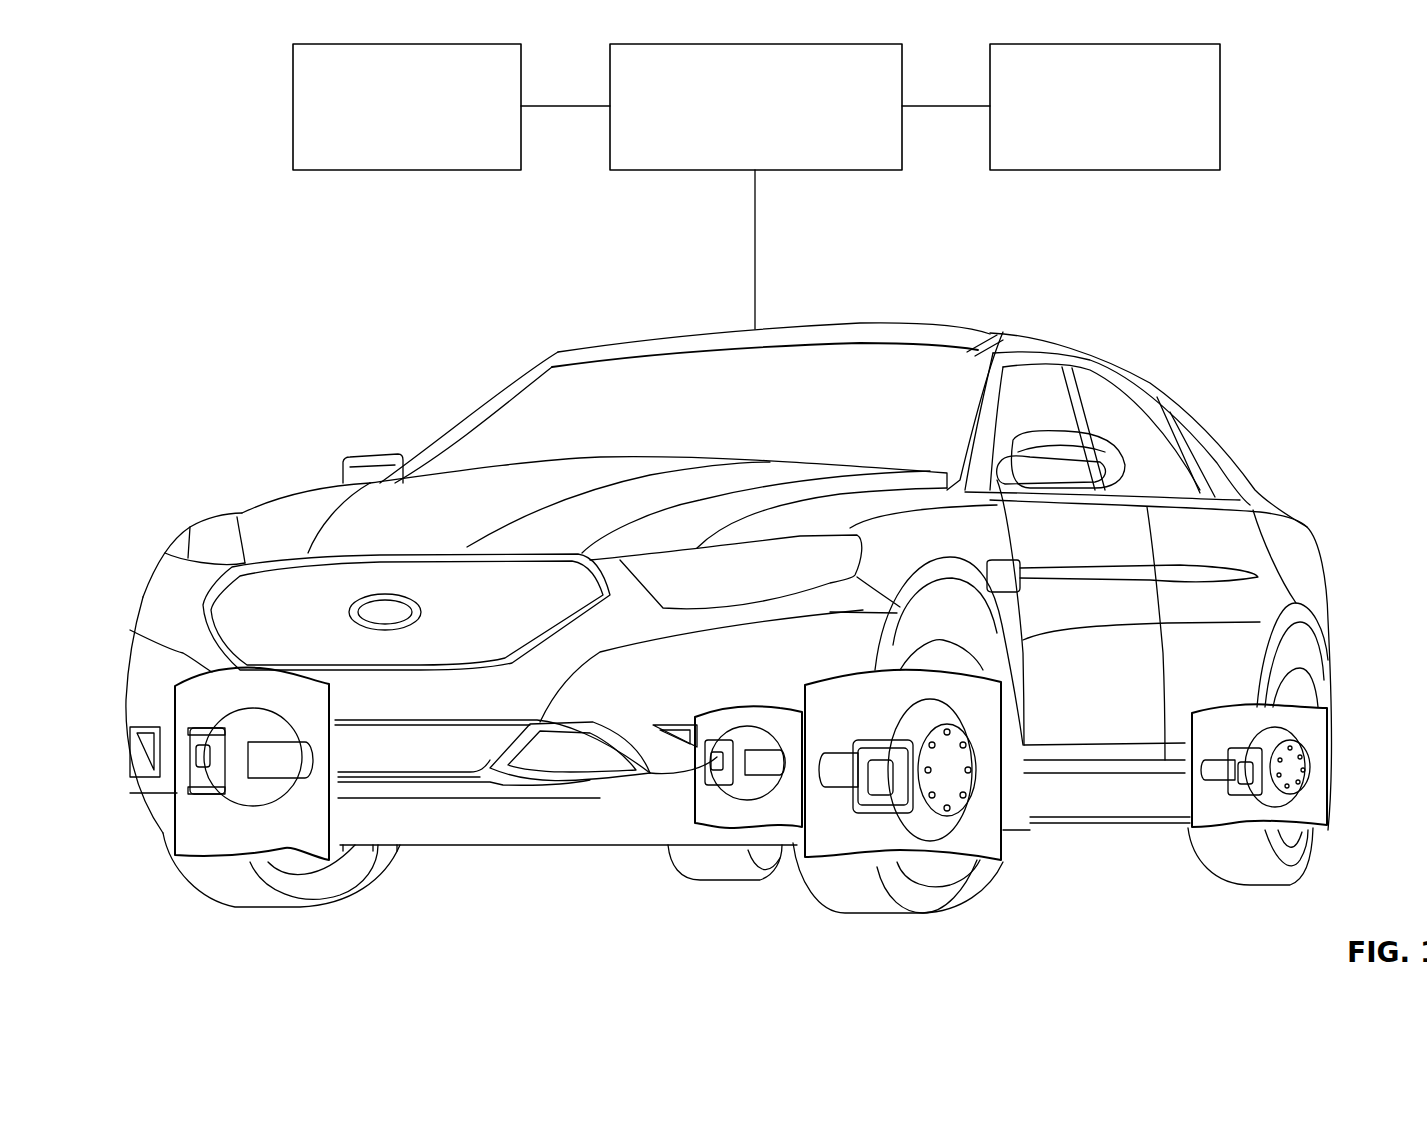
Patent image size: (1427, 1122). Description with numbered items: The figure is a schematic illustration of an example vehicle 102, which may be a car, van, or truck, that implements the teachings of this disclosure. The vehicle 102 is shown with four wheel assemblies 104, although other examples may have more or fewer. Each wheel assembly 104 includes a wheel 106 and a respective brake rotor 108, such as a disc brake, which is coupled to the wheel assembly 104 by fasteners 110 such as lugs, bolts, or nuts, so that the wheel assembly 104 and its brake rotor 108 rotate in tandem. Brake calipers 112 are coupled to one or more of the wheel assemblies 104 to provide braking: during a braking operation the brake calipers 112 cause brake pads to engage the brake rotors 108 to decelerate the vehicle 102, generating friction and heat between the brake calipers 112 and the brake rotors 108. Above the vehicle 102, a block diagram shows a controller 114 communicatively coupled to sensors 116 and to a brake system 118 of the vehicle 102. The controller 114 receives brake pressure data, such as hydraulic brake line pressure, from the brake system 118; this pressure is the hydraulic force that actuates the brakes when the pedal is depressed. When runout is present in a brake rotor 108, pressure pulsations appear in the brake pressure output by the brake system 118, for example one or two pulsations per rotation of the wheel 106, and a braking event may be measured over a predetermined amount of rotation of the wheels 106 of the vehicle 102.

The vehicle 102 is at (868, 323).
The wheel assemblies 104 is at (272, 917).
The wheel 106 is at (232, 900).
The brake rotor 108 is at (283, 712).
The fasteners 110 is at (983, 812).
The brake calipers 112 is at (207, 730).
The controller 114 is at (736, 133).
The sensors 116 is at (1085, 133).
The brake system 118 is at (387, 133).